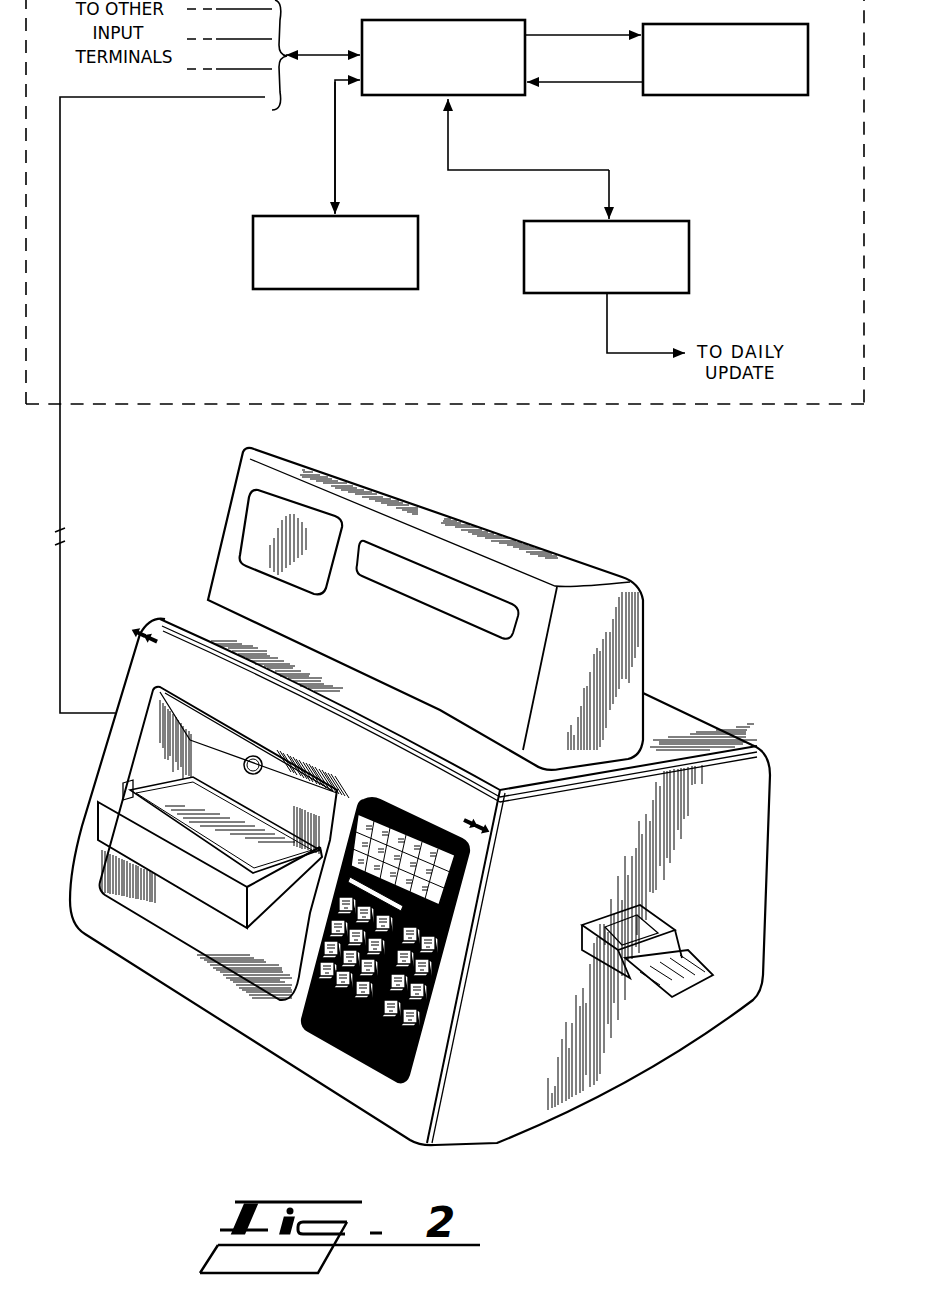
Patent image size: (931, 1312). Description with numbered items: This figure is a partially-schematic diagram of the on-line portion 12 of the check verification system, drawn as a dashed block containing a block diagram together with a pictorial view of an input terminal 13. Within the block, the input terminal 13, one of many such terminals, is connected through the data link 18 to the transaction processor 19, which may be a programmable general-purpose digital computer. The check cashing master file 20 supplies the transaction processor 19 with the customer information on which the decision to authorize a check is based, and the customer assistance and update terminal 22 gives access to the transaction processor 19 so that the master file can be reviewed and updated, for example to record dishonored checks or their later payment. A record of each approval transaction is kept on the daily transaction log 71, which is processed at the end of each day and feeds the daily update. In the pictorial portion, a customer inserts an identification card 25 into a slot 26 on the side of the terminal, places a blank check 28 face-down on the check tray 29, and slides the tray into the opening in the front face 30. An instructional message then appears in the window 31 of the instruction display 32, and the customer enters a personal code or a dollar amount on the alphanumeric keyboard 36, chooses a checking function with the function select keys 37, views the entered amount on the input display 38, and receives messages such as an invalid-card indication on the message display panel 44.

The on-line portion 12 is at (724, 412).
The input terminal 13 is at (765, 606).
The data link 18 is at (60, 336).
The transaction processor 19 is at (388, 97).
The check cashing master file 20 is at (760, 96).
The customer assistance and update terminal 22 is at (300, 290).
The identification card 25 is at (687, 990).
The slot 26 is at (595, 927).
The blank check 28 is at (122, 797).
The check tray 29 is at (103, 823).
The front face 30 is at (195, 992).
The window 31 is at (500, 636).
The instruction display 32 is at (214, 547).
The alphanumeric keyboard 36 is at (320, 943).
The function select keys 37 is at (423, 993).
The input display 38 is at (335, 858).
The message display panel 44 is at (443, 891).
The daily transaction log 71 is at (556, 293).